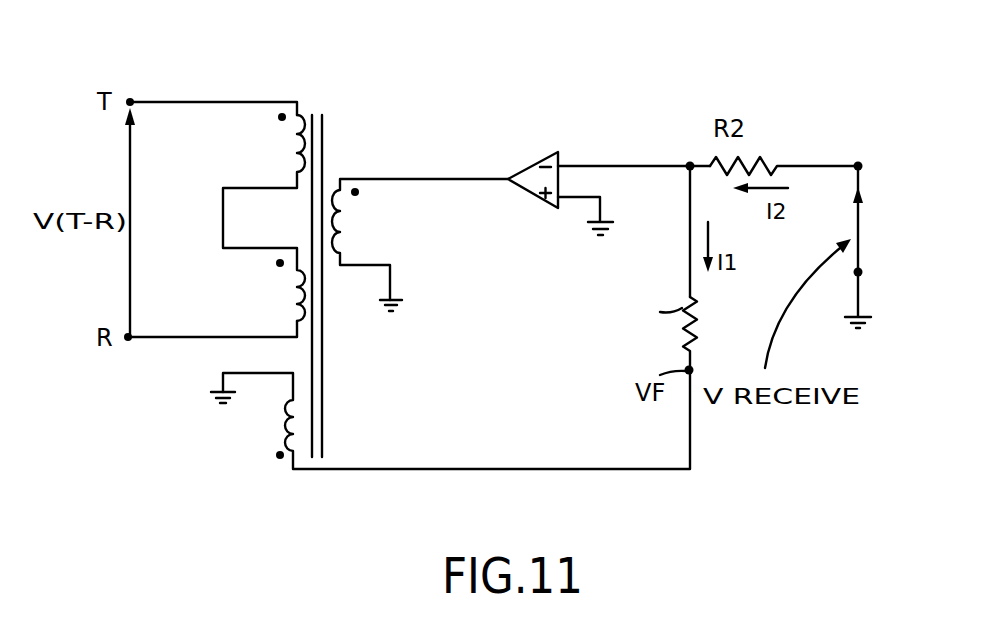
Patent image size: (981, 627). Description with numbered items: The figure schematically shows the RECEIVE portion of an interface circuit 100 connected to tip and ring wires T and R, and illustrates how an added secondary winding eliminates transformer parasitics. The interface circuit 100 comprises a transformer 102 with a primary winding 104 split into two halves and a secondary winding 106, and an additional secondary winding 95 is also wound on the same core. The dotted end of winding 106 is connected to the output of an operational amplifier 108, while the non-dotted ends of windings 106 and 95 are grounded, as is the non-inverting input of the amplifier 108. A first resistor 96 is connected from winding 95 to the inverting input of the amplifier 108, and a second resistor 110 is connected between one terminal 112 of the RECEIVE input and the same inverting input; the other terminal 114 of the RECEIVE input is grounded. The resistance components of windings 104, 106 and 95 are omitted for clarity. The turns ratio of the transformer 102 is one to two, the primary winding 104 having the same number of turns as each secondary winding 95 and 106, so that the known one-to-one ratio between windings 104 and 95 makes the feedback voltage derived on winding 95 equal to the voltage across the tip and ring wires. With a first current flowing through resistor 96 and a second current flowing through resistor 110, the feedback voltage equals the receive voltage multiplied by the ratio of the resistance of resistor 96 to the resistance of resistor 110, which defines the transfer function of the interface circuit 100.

The additional secondary winding 95 is at (303, 428).
The resistor 96 is at (682, 342).
The interface circuit 100 is at (516, 130).
The transformer 102 is at (318, 110).
The primary winding 104 is at (293, 162).
The secondary winding 106 is at (348, 233).
The operational amplifier 108 is at (533, 164).
The resistor 110 is at (710, 165).
The terminal 112 is at (857, 162).
The other terminal 114 is at (857, 275).